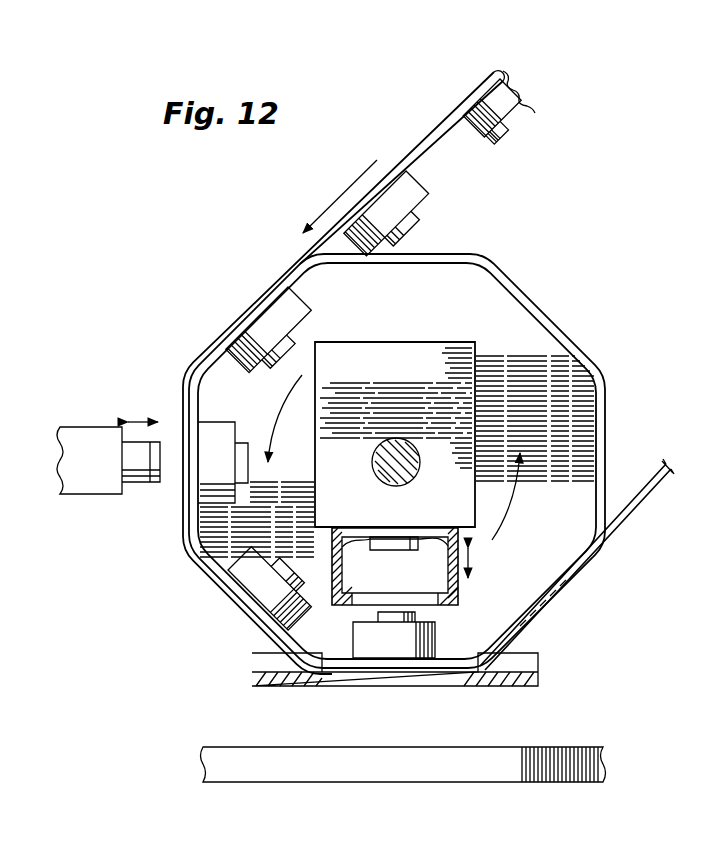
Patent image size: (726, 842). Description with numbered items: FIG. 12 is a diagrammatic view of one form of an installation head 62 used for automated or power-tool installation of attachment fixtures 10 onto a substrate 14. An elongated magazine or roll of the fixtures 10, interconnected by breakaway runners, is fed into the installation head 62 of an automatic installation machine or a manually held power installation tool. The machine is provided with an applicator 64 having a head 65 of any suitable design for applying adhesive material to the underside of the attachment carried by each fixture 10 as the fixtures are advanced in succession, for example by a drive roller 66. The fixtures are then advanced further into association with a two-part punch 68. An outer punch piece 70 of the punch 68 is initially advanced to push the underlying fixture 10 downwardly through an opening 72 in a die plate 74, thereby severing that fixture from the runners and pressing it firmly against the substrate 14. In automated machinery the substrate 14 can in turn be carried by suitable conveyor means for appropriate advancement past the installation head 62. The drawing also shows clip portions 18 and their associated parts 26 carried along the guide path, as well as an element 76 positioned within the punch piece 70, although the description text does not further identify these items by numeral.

The attachment fixture 10 is at (528, 128).
The substrate 14 is at (245, 760).
The clip 18 is at (412, 198).
The clip terminal 26 is at (414, 243).
The installation head 62 is at (193, 320).
The applicator 64 is at (78, 437).
The head 65 is at (158, 485).
The drive roller 66 is at (560, 341).
The two-part punch 68 is at (506, 576).
The outer punch piece 70 is at (460, 597).
The opening 72 is at (445, 688).
The die plate 74 is at (536, 684).
The cam 76 is at (398, 540).